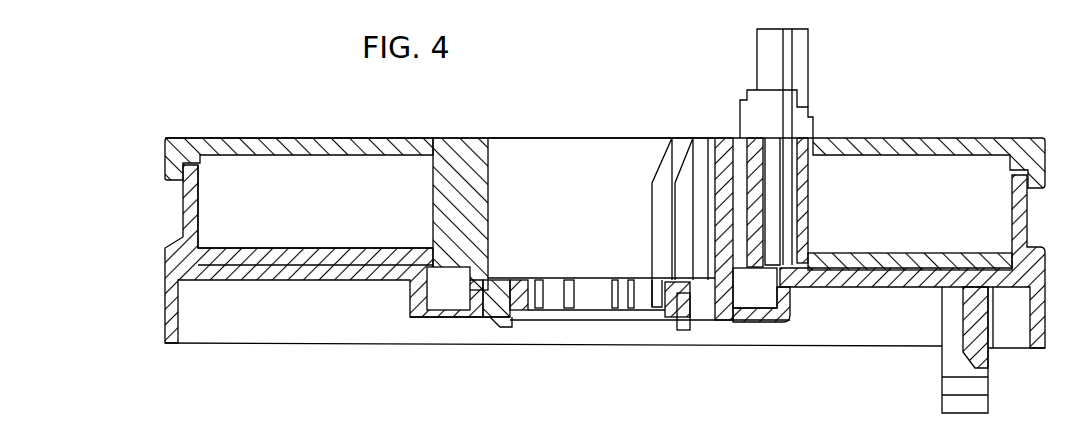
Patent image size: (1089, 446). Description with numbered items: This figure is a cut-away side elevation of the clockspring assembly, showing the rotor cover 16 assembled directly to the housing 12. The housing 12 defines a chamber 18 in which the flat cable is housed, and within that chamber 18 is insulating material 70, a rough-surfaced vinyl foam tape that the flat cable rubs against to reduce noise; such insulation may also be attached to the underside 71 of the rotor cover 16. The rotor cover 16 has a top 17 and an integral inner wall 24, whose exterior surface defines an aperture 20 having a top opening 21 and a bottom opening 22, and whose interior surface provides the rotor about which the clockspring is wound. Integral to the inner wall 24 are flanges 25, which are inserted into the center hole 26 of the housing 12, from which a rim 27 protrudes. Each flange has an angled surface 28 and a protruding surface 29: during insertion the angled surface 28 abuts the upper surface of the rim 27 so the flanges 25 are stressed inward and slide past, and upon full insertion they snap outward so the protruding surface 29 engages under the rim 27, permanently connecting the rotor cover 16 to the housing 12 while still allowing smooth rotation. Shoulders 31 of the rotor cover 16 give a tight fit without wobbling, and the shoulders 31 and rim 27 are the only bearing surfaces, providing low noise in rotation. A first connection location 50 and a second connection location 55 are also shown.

The housing 12 is at (181, 200).
The rotor cover 16 is at (387, 138).
The top 17 is at (298, 140).
The chamber 18 is at (326, 226).
The aperture 20 is at (596, 231).
The top opening 21 is at (573, 150).
The bottom opening 22 is at (597, 306).
The inner wall 24 is at (473, 202).
The flanges 25 is at (507, 327).
The center hole 26 is at (552, 310).
The rim 27 is at (486, 320).
The angled surfaces 28 is at (700, 323).
The protruding surfaces 29 is at (487, 310).
The shoulders 31 is at (480, 290).
The first connection location 50 is at (812, 114).
The second connection location 55 is at (930, 379).
The insulating material 70 is at (912, 258).
The underside 71 is at (892, 158).